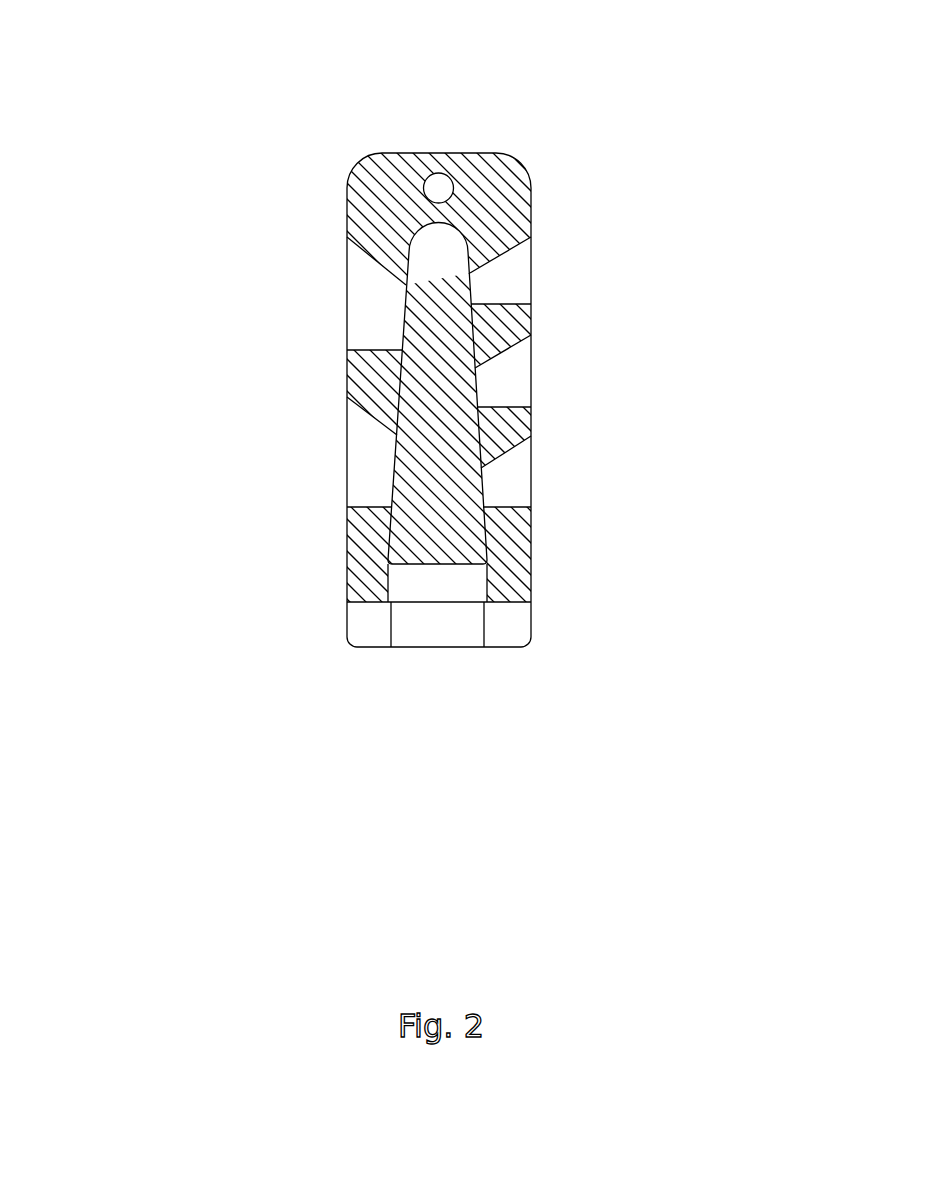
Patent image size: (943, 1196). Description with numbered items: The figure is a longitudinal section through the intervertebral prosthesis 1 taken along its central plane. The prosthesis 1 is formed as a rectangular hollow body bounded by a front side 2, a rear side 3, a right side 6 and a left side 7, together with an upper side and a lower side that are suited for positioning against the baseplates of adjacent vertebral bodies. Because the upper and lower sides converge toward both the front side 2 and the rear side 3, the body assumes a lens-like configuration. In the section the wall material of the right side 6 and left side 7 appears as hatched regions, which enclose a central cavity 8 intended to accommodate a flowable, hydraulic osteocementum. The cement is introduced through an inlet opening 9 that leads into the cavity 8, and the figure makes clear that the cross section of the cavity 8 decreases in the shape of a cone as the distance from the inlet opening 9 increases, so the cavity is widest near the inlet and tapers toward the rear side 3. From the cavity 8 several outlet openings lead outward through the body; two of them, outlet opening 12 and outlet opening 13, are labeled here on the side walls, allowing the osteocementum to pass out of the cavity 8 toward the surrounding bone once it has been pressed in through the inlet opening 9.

The intervertebral prosthesis 1 is at (322, 176).
The front side 2 is at (507, 648).
The rear side 3 is at (460, 152).
The right side 6 is at (530, 565).
The left side 7 is at (347, 572).
The cavity 8 is at (453, 408).
The inlet opening 9 is at (459, 588).
The outlet opening 12 is at (507, 387).
The outlet opening 13 is at (493, 287).